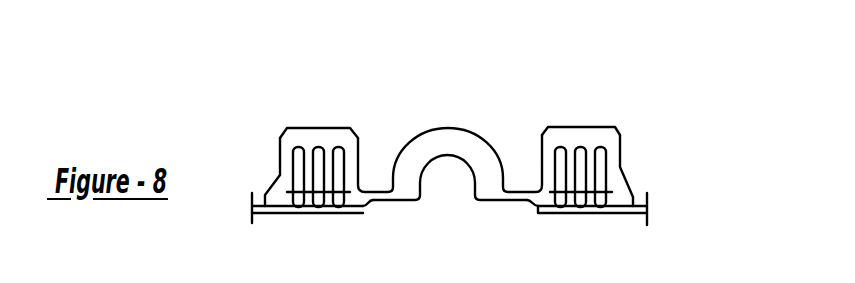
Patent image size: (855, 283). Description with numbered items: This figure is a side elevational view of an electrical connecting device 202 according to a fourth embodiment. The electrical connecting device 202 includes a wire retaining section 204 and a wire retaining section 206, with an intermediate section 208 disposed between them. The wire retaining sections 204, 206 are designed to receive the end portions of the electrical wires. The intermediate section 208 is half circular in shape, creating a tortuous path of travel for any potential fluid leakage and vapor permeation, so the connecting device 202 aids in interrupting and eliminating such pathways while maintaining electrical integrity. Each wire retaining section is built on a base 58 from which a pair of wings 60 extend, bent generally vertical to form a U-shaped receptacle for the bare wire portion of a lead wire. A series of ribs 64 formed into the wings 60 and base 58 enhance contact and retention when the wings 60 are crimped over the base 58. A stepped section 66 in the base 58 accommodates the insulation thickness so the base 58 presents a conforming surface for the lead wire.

The base 58 is at (350, 214).
The wings 60 is at (288, 168).
The ribs 64 is at (345, 147).
The stepped section 66 is at (372, 207).
The electrical connecting device 202 is at (640, 105).
The wire retaining section 204 is at (308, 128).
The wire retaining section 206 is at (606, 127).
The intermediate section 208 is at (470, 128).